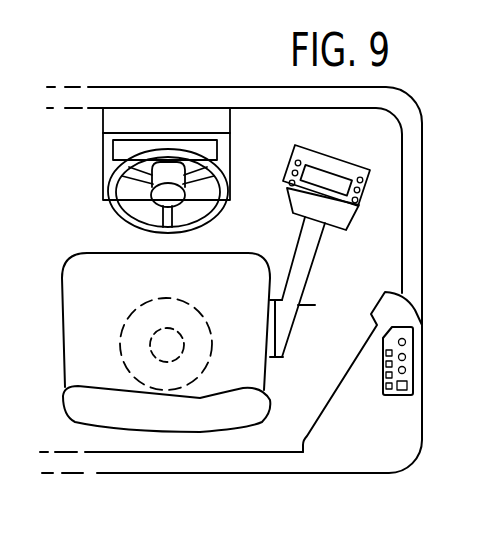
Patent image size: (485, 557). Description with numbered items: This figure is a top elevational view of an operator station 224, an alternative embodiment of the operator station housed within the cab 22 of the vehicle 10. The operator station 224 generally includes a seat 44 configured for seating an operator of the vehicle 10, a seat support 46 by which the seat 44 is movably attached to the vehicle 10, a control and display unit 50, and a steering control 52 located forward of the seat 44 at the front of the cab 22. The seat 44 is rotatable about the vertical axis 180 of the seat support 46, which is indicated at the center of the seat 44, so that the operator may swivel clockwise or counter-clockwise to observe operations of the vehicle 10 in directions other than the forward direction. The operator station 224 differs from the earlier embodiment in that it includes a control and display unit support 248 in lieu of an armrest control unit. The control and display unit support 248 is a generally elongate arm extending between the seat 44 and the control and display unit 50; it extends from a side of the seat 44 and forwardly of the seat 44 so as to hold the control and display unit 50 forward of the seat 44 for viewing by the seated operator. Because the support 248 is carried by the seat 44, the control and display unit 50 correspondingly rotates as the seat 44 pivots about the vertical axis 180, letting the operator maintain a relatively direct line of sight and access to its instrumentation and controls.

The vehicle 10 is at (106, 60).
The cab 22 is at (198, 86).
The steering control 52 is at (231, 186).
The control and display unit 50 is at (330, 157).
The operator station 224 is at (80, 230).
The seat 44 is at (62, 316).
The vertical axis 180 is at (167, 347).
The seat support 46 is at (128, 368).
The control and display unit support 248 is at (315, 305).